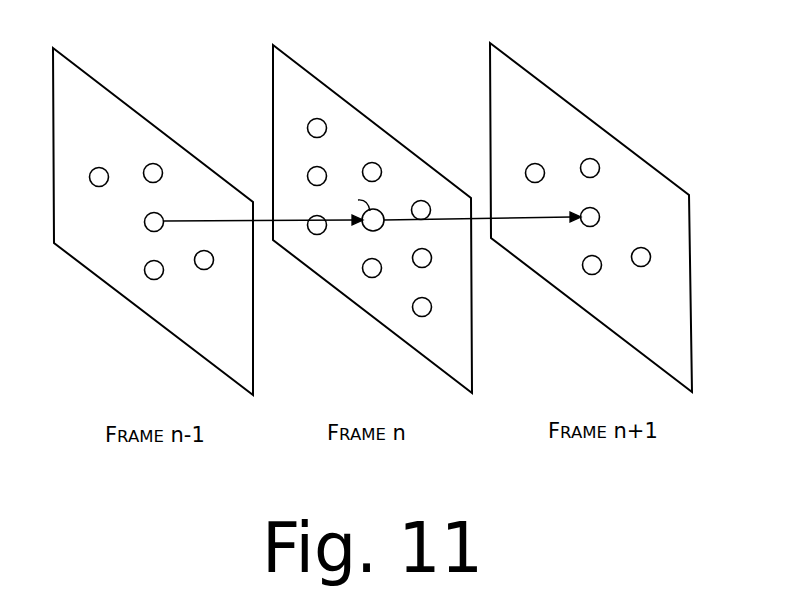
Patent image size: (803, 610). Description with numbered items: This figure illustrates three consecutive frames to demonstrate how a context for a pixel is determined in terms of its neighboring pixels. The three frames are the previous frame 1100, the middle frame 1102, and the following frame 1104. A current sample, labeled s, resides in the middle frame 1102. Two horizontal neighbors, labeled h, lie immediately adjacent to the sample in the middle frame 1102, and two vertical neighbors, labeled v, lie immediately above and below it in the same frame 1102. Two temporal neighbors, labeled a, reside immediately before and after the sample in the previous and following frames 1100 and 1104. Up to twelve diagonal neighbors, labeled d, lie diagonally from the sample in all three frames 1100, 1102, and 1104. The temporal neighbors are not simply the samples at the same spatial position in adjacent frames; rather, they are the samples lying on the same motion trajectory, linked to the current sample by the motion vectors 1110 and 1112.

The previous frame 1100 is at (105, 87).
The middle frame 1102 is at (325, 83).
The following frame 1104 is at (542, 80).
The motion vector 1110 is at (265, 222).
The motion vector 1112 is at (482, 220).